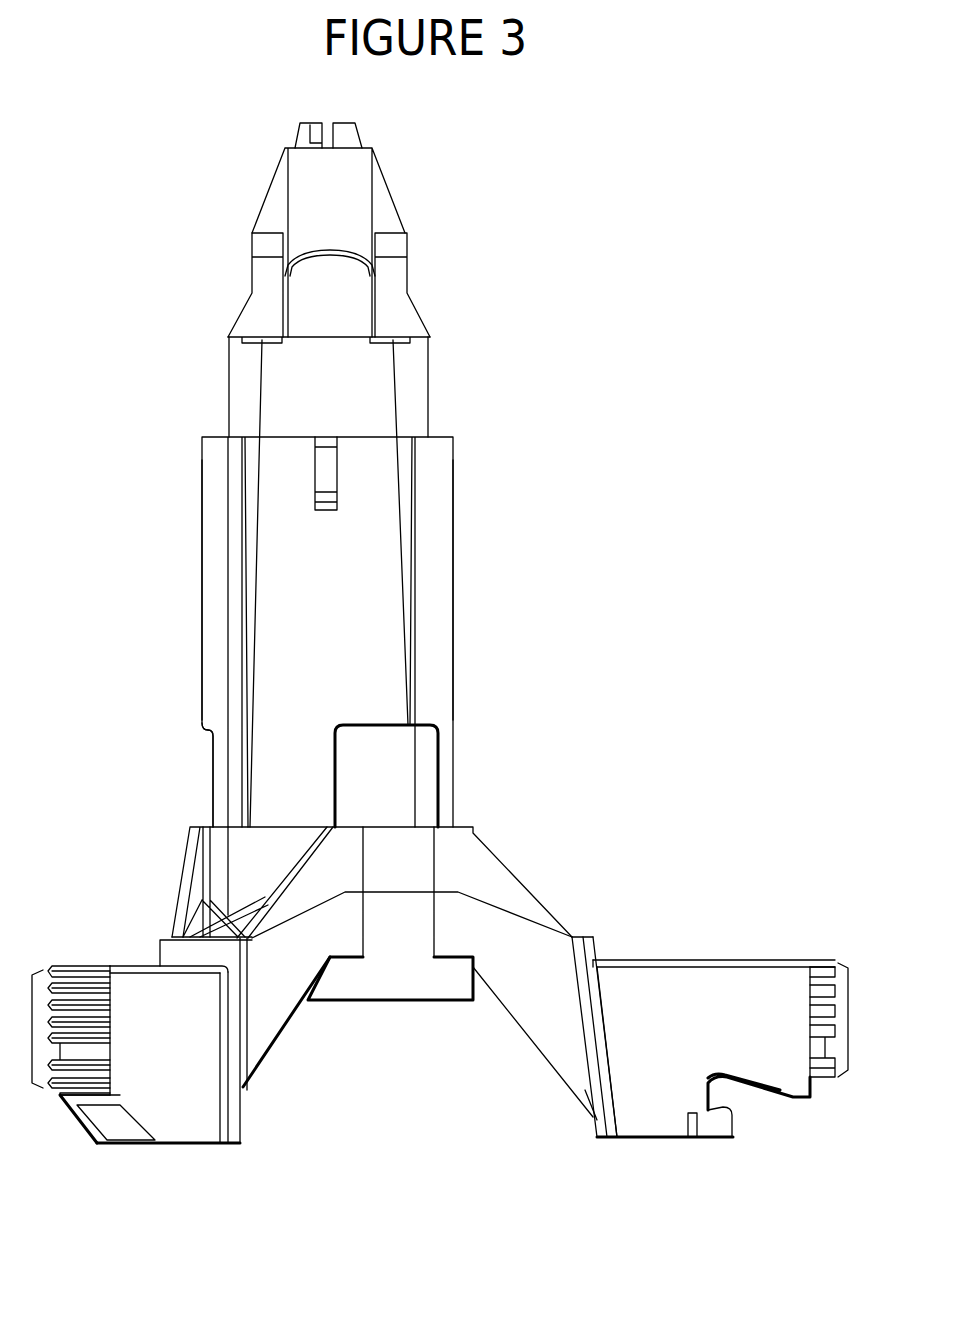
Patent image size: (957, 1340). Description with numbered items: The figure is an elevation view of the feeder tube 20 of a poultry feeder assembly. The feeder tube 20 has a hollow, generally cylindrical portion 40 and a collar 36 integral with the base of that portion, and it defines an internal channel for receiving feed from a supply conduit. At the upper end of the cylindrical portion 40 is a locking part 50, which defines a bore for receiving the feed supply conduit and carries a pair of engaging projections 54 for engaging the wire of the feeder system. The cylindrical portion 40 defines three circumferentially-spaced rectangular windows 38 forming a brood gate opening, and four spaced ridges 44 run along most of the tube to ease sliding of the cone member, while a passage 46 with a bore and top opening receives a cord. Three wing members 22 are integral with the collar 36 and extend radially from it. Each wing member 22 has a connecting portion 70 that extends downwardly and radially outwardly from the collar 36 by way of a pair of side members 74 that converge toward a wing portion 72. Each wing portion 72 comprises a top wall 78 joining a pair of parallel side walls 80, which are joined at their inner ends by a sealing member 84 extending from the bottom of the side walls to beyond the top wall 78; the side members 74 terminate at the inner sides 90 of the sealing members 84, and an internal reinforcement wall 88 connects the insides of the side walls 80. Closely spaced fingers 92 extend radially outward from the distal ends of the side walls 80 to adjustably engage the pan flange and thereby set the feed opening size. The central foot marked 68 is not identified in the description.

The feeder tube 20 is at (460, 383).
The wing members 22 is at (562, 922).
The collar 36 is at (407, 982).
The rectangular windows 38 is at (425, 752).
The cylindrical portion 40 is at (457, 527).
The ridges 44 is at (457, 583).
The passages 46 is at (334, 474).
The locking part 50 is at (405, 237).
The engaging projections 54 is at (340, 123).
The central foot 68 is at (360, 987).
The connecting portion 70 is at (537, 1023).
The wing portion 72 is at (787, 1080).
The side members 74 is at (270, 983).
The top wall 78 is at (717, 960).
The side walls 80 is at (57, 1097).
The sealing member 84 is at (593, 1113).
The internal reinforcement wall 88 is at (120, 1137).
The inner sides 90 is at (590, 1077).
The fingers 92 is at (848, 1017).